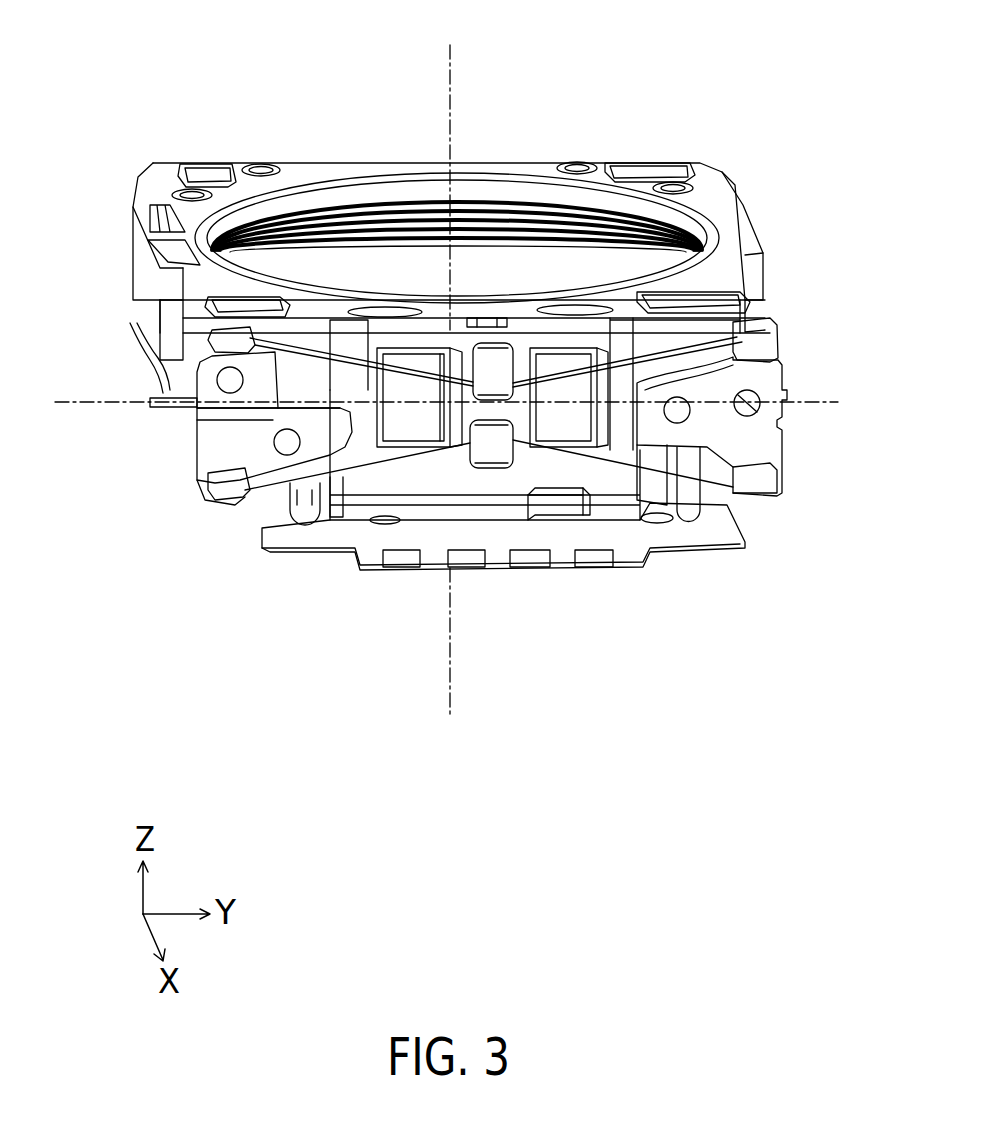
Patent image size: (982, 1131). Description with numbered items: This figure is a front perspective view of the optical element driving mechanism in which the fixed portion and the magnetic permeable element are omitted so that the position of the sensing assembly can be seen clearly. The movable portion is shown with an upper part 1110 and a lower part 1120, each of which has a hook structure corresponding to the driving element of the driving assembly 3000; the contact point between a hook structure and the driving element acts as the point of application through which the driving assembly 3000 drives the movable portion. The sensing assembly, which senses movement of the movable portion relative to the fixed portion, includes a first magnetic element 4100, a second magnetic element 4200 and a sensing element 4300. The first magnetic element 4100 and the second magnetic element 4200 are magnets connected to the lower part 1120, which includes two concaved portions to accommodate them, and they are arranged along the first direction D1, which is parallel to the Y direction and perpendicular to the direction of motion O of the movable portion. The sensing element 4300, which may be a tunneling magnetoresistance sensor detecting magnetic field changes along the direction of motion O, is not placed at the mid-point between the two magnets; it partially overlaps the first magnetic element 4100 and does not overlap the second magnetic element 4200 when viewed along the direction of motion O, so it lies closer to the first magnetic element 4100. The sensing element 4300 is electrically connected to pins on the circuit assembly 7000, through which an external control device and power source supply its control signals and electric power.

The upper part 1110 is at (440, 318).
The lower part 1120 is at (492, 455).
The driving assembly 3000 is at (227, 473).
The first magnetic element 4100 is at (565, 385).
The second magnetic element 4200 is at (400, 385).
The sensing element 4300 is at (558, 508).
The circuit assembly 7000 is at (368, 548).
The direction of motion O is at (449, 361).
The first direction D1 is at (467, 401).